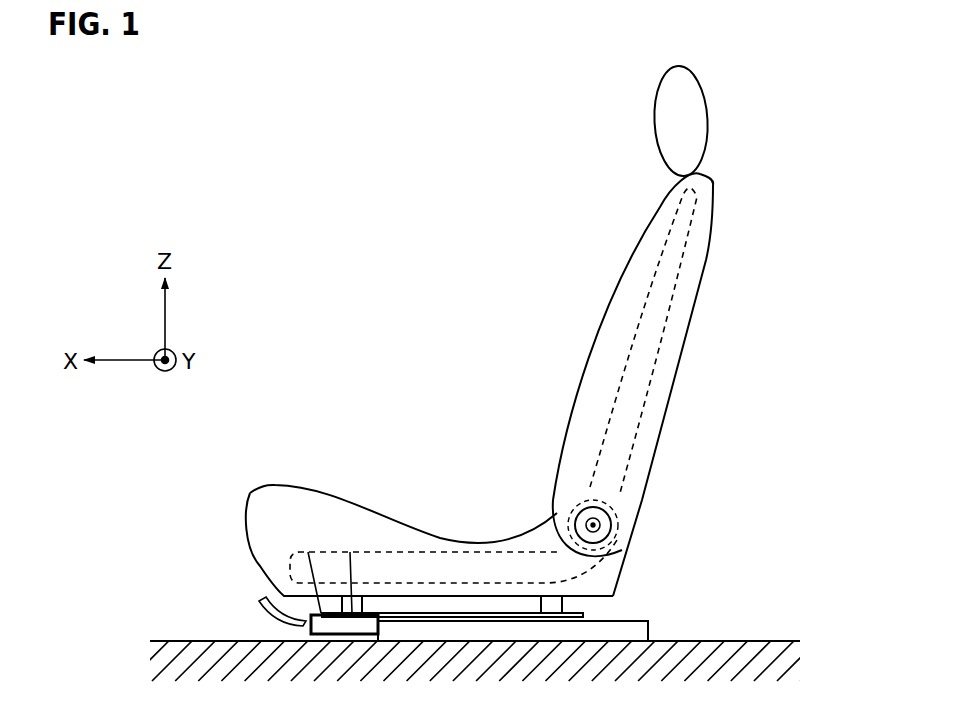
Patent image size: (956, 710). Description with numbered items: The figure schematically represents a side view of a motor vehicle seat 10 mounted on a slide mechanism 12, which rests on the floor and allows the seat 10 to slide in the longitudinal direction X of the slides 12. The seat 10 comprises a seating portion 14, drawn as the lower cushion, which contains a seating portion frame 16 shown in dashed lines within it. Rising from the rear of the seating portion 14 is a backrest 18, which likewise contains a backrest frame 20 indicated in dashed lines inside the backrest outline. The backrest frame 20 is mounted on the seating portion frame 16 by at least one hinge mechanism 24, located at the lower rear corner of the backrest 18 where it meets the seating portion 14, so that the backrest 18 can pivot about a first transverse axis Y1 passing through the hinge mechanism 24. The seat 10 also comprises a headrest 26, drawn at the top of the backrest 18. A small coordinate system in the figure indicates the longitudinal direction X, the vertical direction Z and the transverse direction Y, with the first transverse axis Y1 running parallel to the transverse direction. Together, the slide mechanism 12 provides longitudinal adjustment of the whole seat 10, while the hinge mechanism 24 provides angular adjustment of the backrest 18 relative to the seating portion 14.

The motor vehicle seat 10 is at (344, 216).
The slide mechanism 12 is at (645, 622).
The seating portion 14 is at (287, 508).
The seating portion frame 16 is at (290, 576).
The backrest 18 is at (617, 283).
The backrest frame 20 is at (637, 435).
The hinge mechanism 24 is at (637, 517).
The headrest 26 is at (687, 92).
The first transverse axis Y1 is at (556, 516).